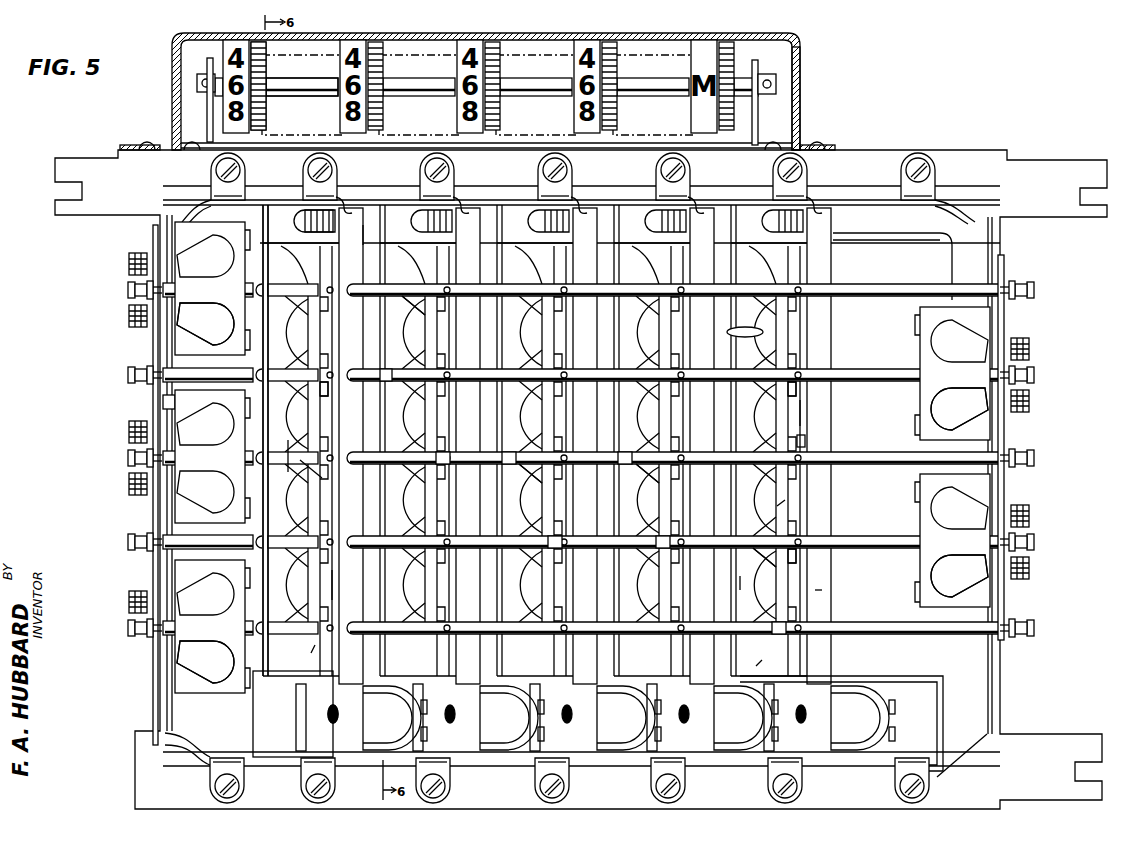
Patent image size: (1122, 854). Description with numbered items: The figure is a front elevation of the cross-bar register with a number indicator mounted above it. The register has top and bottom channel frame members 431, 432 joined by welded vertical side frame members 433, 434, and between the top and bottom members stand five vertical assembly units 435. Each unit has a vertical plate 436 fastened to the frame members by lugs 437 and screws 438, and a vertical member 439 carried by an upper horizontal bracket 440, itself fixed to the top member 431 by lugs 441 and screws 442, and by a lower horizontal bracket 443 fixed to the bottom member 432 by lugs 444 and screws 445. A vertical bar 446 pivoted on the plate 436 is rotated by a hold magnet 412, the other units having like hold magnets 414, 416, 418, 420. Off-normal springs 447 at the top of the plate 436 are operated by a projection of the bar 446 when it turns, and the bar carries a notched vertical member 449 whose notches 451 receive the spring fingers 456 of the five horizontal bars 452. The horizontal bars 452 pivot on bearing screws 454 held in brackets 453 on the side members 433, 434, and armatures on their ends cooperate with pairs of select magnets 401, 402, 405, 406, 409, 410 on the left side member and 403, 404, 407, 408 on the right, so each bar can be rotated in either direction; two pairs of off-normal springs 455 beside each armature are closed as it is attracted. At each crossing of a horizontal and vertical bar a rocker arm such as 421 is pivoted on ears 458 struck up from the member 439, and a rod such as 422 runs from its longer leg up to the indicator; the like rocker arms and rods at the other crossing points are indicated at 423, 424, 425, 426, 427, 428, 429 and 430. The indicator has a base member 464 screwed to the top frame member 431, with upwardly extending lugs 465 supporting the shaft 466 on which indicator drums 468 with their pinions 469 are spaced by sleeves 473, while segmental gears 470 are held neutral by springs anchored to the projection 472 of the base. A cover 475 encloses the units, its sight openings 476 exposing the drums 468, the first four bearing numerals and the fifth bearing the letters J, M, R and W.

The select magnet 401 is at (185, 234).
The select magnet 402 is at (185, 345).
The select magnet 403 is at (975, 326).
The select magnet 404 is at (975, 430).
The select magnet 405 is at (162, 406).
The select magnet 406 is at (185, 510).
The select magnet 407 is at (975, 488).
The select magnet 408 is at (975, 600).
The select magnet 409 is at (185, 576).
The select magnet 410 is at (180, 682).
The hold magnet 412 is at (380, 752).
The hold magnet 414 is at (508, 750).
The hold magnet 416 is at (627, 750).
The hold magnet 418 is at (743, 751).
The hold magnet 420 is at (870, 751).
The rocker arm 421 is at (288, 472).
The rod 422 is at (260, 405).
The contact 423 is at (440, 448).
The contact 424 is at (383, 390).
The contact 425 is at (552, 533).
The contact 426 is at (505, 472).
The contact 427 is at (660, 533).
The contact 428 is at (622, 472).
The contact 429 is at (778, 634).
The contact 430 is at (742, 583).
The top channel frame member 431 is at (982, 152).
The bottom channel frame member 432 is at (992, 752).
The vertical side frame member 433 is at (165, 703).
The vertical side frame member 434 is at (990, 688).
The vertical assembly unit 435 is at (380, 241).
The vertical plate 436 is at (372, 200).
The lug 437 is at (304, 170).
The screw 438 is at (335, 170).
The vertical member 439 is at (782, 501).
The upper horizontal bracket 440 is at (850, 247).
The lug 441 is at (213, 168).
The screw 442 is at (916, 158).
The lower horizontal bracket 443 is at (898, 676).
The lug 444 is at (210, 780).
The screw 445 is at (212, 790).
The vertical bar 446 is at (335, 700).
The off-normal springs 447 is at (306, 220).
The vertical member 449 is at (800, 412).
The notch 451 is at (803, 441).
The horizontal bar 452 is at (848, 287).
The bracket 453 is at (1010, 272).
The bearing screw 454 is at (128, 287).
The off-normal springs 455 is at (128, 428).
The spring finger 456 is at (800, 372).
The ear 458 is at (300, 470).
The base member 464 is at (672, 140).
The lug 465 is at (214, 95).
The shaft 466 is at (776, 82).
The indicator drum 468 is at (228, 114).
The pinion 469 is at (268, 90).
The segmental gear 470 is at (262, 112).
The vertically extending projection 472 is at (640, 52).
The spacing sleeve 473 is at (313, 78).
The cover 475 is at (800, 110).
The sight opening 476 is at (455, 33).